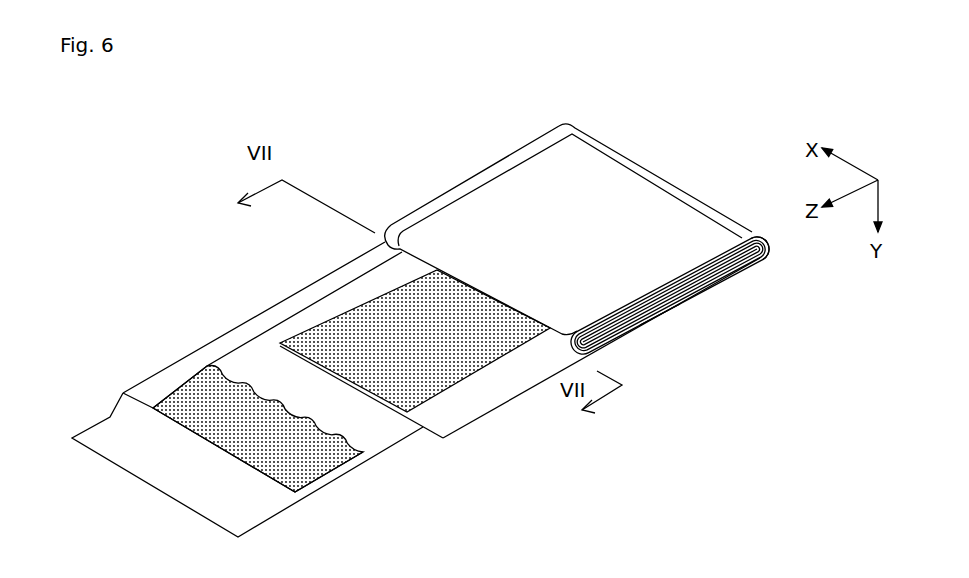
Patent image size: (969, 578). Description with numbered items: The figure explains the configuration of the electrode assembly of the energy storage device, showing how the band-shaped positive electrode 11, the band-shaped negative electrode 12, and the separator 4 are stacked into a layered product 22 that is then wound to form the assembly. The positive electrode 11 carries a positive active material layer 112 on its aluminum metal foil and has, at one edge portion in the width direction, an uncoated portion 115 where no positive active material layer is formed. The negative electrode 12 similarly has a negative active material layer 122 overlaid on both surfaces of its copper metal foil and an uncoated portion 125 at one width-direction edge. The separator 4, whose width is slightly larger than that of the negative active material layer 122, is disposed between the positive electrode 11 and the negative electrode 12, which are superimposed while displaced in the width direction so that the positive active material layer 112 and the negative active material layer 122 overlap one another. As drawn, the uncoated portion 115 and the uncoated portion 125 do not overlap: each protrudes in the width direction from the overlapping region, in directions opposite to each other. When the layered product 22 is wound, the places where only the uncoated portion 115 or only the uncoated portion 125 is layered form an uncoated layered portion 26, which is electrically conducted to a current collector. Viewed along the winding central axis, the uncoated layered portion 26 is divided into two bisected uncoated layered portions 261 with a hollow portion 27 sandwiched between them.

The separator 4 is at (383, 442).
The positive electrode 11 is at (373, 290).
The positive active material layer 112 is at (330, 335).
The uncoated portion of the positive electrode 115 is at (480, 395).
The negative electrode 12 is at (170, 362).
The uncoated portion of the negative electrode 125 is at (212, 352).
The negative active material layer 122 is at (335, 465).
The uncoated layered portion 26 is at (485, 173).
The bisected uncoated layered portions 261 is at (677, 275).
The hollow portion 27 is at (741, 258).
The layered product 22 is at (663, 322).